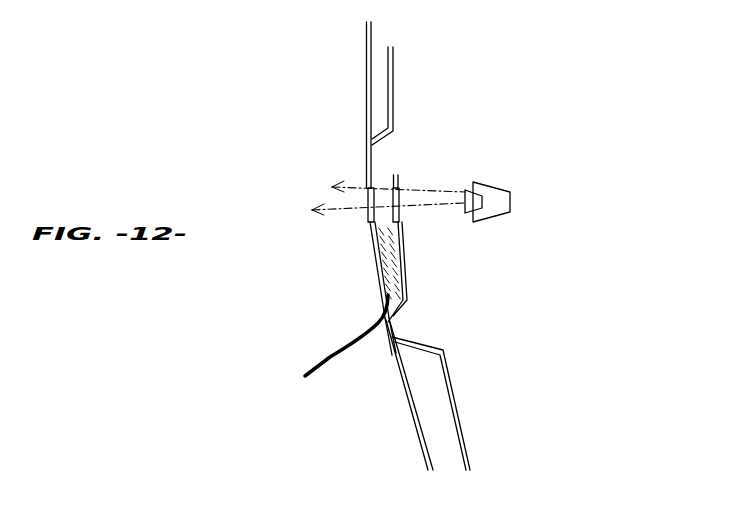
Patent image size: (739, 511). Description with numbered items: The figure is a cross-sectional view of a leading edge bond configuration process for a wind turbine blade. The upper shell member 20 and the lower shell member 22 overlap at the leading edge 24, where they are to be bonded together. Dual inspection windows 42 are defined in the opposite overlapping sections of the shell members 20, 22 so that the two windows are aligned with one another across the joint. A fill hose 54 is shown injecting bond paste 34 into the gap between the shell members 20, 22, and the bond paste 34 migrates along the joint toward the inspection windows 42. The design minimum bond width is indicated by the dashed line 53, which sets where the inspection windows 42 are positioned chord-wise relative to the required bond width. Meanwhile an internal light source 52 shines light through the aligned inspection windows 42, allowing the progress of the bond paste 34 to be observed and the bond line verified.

The upper shell member 20 is at (366, 93).
The lower shell member 22 is at (410, 423).
The leading edge 24 is at (337, 245).
The bond paste 34 is at (385, 257).
The inspection window 42 is at (368, 205).
The internal light source 52 is at (512, 201).
The design minimum bond width line 53 is at (381, 186).
The fill hose 54 is at (303, 374).